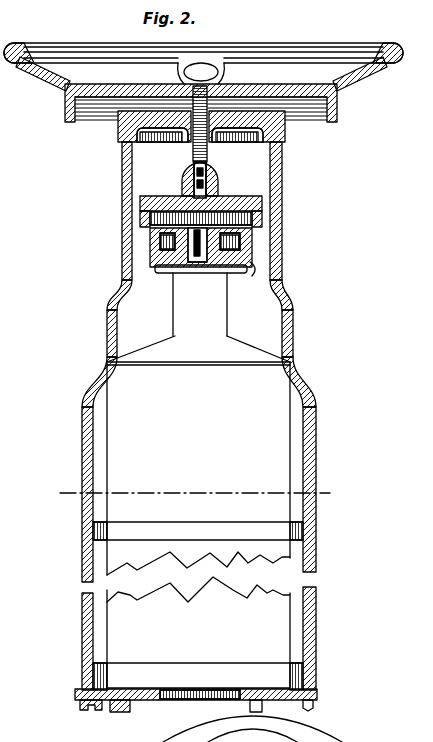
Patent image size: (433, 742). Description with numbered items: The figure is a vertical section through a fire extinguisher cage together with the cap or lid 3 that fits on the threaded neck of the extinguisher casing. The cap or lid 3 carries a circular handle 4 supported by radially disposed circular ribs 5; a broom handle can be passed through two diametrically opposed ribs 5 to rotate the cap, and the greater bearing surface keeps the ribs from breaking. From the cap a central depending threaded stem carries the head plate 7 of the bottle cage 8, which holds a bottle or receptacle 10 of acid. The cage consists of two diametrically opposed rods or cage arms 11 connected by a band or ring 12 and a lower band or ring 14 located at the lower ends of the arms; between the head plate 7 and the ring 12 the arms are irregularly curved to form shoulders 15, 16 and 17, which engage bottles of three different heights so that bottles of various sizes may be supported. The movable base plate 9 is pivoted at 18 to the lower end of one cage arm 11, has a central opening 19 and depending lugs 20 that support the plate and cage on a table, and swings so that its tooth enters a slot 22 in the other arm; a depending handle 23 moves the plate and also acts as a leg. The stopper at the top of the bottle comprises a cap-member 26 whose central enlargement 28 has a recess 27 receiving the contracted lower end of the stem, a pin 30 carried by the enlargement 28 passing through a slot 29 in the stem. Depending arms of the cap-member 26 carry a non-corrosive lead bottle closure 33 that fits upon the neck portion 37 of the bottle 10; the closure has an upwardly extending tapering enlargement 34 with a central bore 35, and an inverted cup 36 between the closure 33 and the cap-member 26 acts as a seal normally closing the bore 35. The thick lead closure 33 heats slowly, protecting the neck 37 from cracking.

The cap or lid 3 is at (268, 88).
The circular handle 4 is at (80, 46).
The circular ribs 5 is at (232, 73).
The head plate 7 is at (140, 123).
The bottle cage 8 is at (150, 250).
The movable base plate 9 is at (150, 699).
The bottle or receptacle 10 is at (198, 512).
The rods or cage arms 11 is at (115, 315).
The band or ring 12 is at (93, 533).
The band or ring 14 is at (93, 680).
The shoulders 15 is at (85, 409).
The shoulders 16 is at (100, 372).
The shoulders 17 is at (119, 306).
The pivot 18 is at (312, 692).
The central opening 19 is at (202, 691).
The depending lugs 20 is at (264, 707).
The slot 22 is at (82, 704).
The depending handle 23 is at (121, 712).
The cap-member 26 is at (258, 204).
The recess 27 is at (188, 178).
The central enlargement 28 is at (222, 196).
The slot 29 is at (208, 163).
The pin 30 is at (212, 180).
The bottle closure 33 is at (253, 276).
The tapering enlargement 34 is at (255, 246).
The central bore 35 is at (190, 252).
The inverted cup 36 is at (255, 236).
The neck portion 37 is at (228, 318).